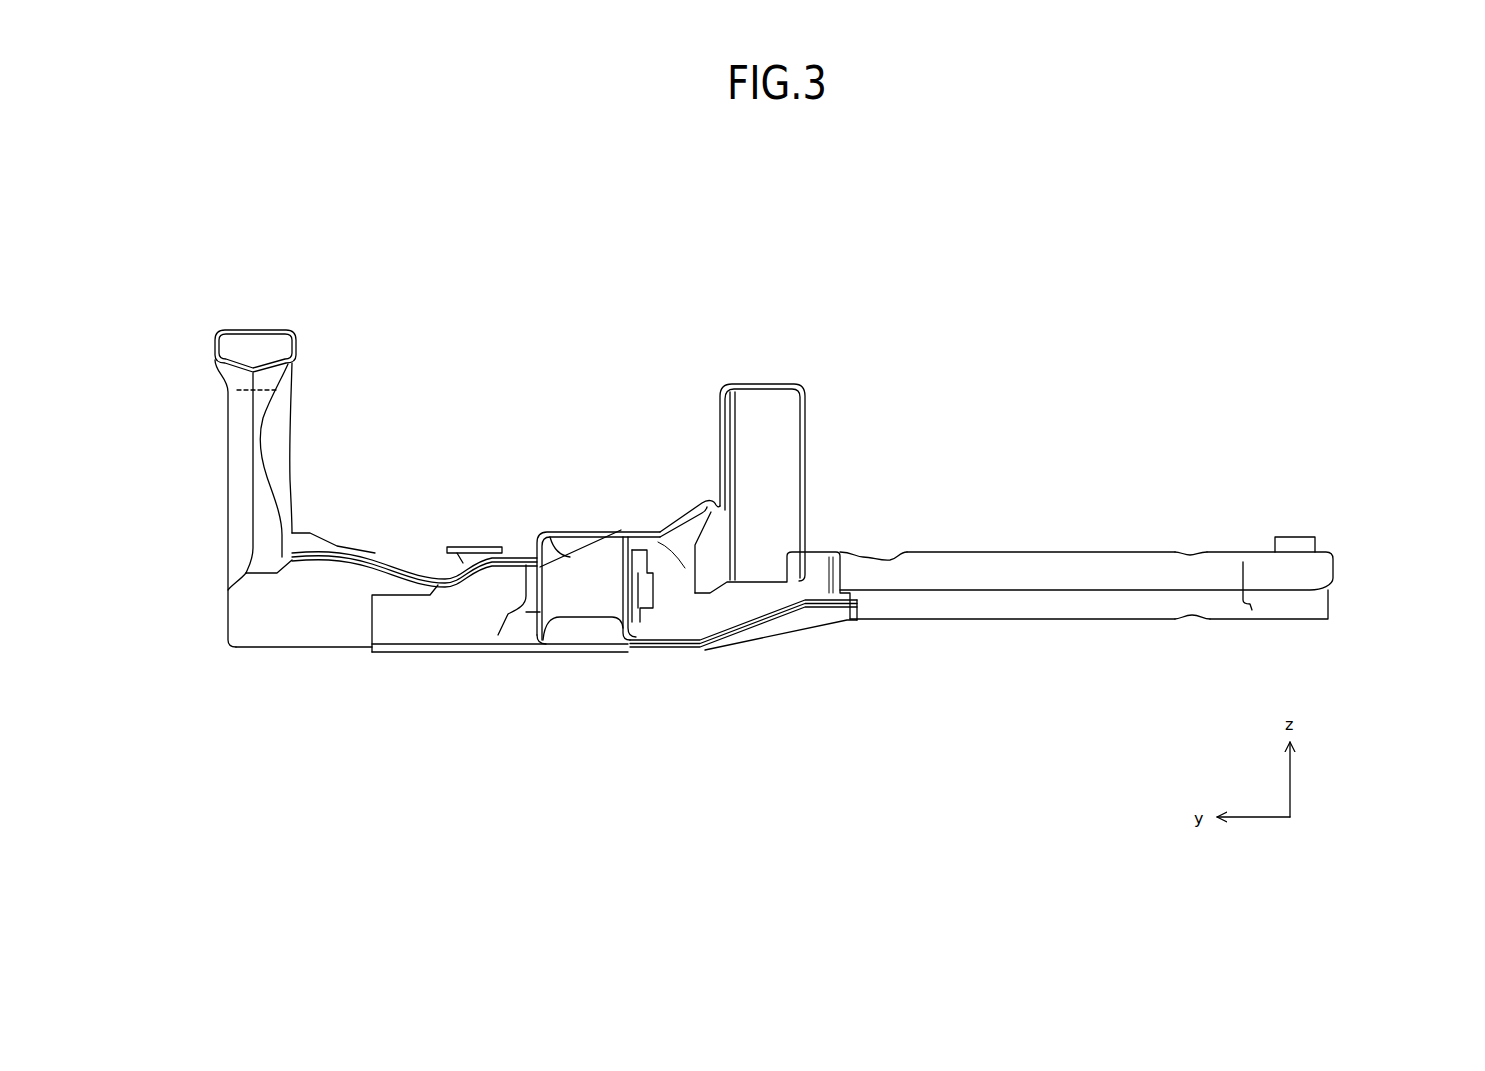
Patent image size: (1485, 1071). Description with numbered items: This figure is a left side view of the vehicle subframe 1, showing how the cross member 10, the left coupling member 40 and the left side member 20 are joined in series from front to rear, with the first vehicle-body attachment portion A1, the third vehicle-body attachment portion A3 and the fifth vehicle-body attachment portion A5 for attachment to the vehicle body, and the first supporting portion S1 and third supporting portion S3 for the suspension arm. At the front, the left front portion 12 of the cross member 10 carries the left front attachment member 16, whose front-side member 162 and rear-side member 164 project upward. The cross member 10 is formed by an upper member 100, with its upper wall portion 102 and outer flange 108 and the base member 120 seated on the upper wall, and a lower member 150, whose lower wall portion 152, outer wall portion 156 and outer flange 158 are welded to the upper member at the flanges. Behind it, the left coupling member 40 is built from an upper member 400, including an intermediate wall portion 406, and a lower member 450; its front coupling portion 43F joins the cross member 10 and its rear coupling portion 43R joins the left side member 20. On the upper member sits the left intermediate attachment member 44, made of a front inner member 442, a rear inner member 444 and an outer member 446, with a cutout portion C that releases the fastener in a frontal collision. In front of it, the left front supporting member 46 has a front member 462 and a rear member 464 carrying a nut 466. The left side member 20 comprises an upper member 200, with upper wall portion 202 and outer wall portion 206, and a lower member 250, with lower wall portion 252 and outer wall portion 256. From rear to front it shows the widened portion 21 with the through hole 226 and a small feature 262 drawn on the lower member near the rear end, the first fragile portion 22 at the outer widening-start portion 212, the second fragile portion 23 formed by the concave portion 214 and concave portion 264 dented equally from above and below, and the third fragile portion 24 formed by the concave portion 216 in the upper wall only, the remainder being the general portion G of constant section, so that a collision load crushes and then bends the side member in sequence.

The subframe 1 is at (935, 298).
The cross member 10 is at (372, 524).
The left front portion 12 is at (294, 642).
The left front attachment member 16 is at (276, 318).
The left side member 20 is at (1098, 478).
The widened portion 21 is at (1345, 602).
The first fragile portion 22 is at (1242, 548).
The second fragile portion 23 is at (1179, 548).
The third fragile portion 24 is at (885, 553).
The left coupling member 40 is at (556, 505).
The front coupling portion 43F is at (400, 656).
The rear coupling portion 43R is at (848, 636).
The left intermediate attachment member 44 is at (802, 372).
The left front supporting member 46 is at (611, 516).
The upper member 100 is at (346, 546).
The upper wall portion 102 is at (343, 548).
The outer flange 108 is at (382, 563).
The base member 120 is at (463, 546).
The lower member 150 is at (250, 658).
The lower wall portion 152 is at (273, 651).
The outer wall portion 156 is at (236, 650).
The outer flange 158 is at (345, 563).
The front-side member 162 is at (242, 420).
The rear-side member 164 is at (273, 437).
The upper member 200 is at (1033, 545).
The upper wall portion 202 is at (1077, 560).
The outer wall portion 206 is at (1025, 572).
The outer widening-start portion 212 is at (1243, 580).
The concave portion 214 is at (1193, 548).
The concave portion 216 is at (868, 550).
The through hole 226 is at (1300, 523).
The lower member 250 is at (1085, 623).
The lower wall portion 252 is at (1015, 623).
The outer wall portion 256 is at (1153, 596).
The lower rail hook 262 is at (1252, 610).
The concave portion 264 is at (1190, 623).
The upper member 400 is at (822, 538).
The intermediate wall portion 406 is at (447, 610).
The front inner member 442 is at (733, 380).
The rear inner member 444 is at (808, 425).
The outer member 446 is at (745, 568).
The lower member 450 is at (738, 652).
The front member 462 is at (518, 600).
The rear member 464 is at (620, 632).
The nut 466 is at (668, 608).
The first vehicle-body attachment portion A1 is at (225, 316).
The third vehicle-body attachment portion A3 is at (760, 352).
The fifth vehicle-body attachment portion A5 is at (1393, 569).
The cutout portion C is at (766, 380).
The general portion G is at (947, 623).
The first supporting portion S1 is at (585, 606).
The third supporting portion S3 is at (962, 522).